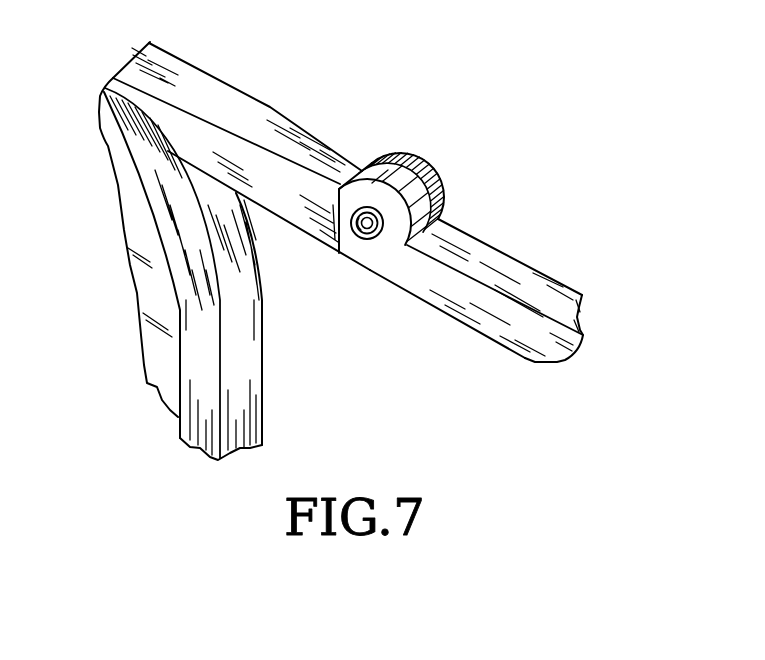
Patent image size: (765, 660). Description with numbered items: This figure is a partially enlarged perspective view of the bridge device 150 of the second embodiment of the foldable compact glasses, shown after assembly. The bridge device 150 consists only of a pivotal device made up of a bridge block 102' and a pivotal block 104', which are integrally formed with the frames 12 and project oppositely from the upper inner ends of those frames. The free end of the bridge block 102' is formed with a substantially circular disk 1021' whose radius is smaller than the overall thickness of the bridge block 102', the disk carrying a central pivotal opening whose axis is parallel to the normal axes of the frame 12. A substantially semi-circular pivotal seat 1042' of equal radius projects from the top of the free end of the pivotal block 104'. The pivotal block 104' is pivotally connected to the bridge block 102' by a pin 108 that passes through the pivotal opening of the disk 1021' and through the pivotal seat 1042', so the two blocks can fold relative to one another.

The frame 12 is at (253, 332).
The bridge block 102' is at (241, 156).
The pivotal block 104' is at (476, 274).
The pin 108 is at (367, 241).
The bridge device 150 is at (403, 93).
The disk 1021' is at (396, 176).
The pivotal seat 1042' is at (446, 182).